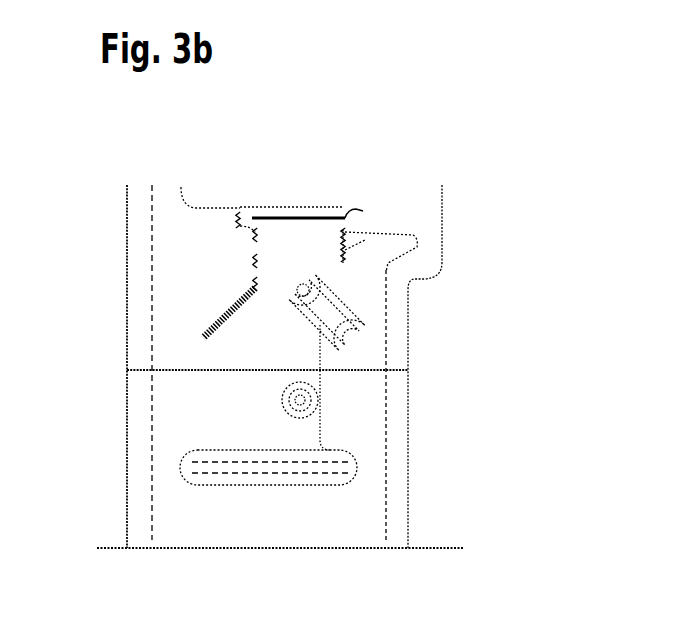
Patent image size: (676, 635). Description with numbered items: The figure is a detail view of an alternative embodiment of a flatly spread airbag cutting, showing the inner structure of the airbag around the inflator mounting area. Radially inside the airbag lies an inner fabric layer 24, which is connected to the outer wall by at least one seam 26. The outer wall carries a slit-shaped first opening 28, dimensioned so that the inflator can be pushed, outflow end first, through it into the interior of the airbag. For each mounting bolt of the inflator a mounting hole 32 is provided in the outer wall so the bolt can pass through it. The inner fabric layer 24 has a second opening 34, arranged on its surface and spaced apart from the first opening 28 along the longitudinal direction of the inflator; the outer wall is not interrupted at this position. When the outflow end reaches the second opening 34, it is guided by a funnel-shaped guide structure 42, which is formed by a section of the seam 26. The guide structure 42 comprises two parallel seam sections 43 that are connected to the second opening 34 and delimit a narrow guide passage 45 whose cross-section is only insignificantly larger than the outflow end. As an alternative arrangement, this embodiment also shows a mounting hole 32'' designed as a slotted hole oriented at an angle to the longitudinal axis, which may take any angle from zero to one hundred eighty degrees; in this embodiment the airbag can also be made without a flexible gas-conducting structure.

The inner fabric layer 24 is at (168, 356).
The seam 26 is at (350, 369).
The first opening 28 is at (283, 485).
The mounting hole 32 is at (397, 407).
The mounting hole 32'' is at (403, 312).
The second opening 34 is at (302, 217).
The guide structure 42 is at (215, 298).
The seam sections 43 is at (378, 233).
The guide passage 45 is at (295, 250).